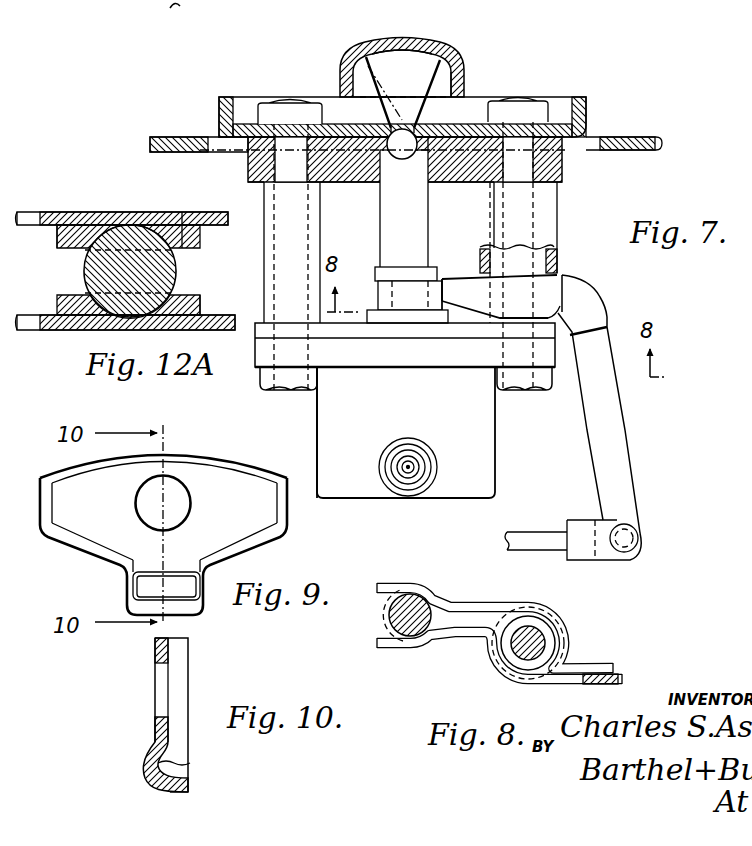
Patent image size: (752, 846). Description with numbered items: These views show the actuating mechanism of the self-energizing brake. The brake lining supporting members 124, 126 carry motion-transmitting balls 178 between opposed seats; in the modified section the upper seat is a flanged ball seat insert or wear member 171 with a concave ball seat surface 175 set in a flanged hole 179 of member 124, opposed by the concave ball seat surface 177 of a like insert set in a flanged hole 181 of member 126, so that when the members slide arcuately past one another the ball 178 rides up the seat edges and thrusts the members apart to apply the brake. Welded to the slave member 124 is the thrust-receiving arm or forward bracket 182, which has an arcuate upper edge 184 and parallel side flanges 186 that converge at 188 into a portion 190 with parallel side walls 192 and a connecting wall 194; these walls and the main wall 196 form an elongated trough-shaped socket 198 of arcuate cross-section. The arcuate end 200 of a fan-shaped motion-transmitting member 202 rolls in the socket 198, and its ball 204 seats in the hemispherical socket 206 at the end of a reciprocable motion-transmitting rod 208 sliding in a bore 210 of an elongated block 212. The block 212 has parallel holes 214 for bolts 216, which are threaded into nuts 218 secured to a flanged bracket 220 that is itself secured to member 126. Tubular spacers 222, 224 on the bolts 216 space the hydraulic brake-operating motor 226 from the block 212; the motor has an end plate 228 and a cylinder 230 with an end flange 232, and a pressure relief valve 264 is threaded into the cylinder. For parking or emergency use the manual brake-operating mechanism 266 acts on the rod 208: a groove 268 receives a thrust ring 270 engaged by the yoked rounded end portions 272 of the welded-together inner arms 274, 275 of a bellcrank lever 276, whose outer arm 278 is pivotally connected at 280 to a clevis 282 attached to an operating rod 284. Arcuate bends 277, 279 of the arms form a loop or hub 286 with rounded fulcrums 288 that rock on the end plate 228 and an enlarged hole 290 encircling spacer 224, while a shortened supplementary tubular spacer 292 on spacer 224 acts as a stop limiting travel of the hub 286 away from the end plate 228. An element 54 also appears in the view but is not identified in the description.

In FIG. 7, the mounting flange 54 is at (643, 133).
In FIG. 12A, the brake lining supporting member 124 is at (50, 209).
In FIG. 12A, the brake lining supporting member 126 is at (44, 334).
In FIG. 12A, the flanged ball seat insert 171 is at (110, 212).
In FIG. 12A, the concave ball seat surface 175 is at (82, 258).
In FIG. 12A, the concave ball seat surface 177 is at (88, 295).
In FIG. 12A, the motion-transmitting ball 178 is at (168, 266).
In FIG. 12A, the flanged hole 179 is at (172, 215).
In FIG. 12A, the flanged hole 181 is at (172, 325).
In FIG. 7, the forward bracket 182 is at (443, 42).
In FIG. 9, the forward bracket 182 is at (293, 528).
In FIG. 10, the forward bracket 182 is at (193, 677).
In FIG. 9, the arcuate upper edge 184 is at (245, 464).
In FIG. 9, the side flanges 186 is at (48, 492).
In FIG. 9, the converging portion 188 is at (105, 552).
In FIG. 9, the portion 190 is at (127, 604).
In FIG. 7, the side walls 192 is at (457, 80).
In FIG. 9, the side walls 192 is at (130, 578).
In FIG. 9, the connecting wall 194 is at (190, 610).
In FIG. 10, the connecting wall 194 is at (178, 792).
In FIG. 9, the main wall 196 is at (171, 513).
In FIG. 10, the main wall 196 is at (154, 745).
In FIG. 7, the trough-shaped socket 198 is at (373, 52).
In FIG. 9, the trough-shaped socket 198 is at (166, 586).
In FIG. 10, the trough-shaped socket 198 is at (190, 763).
In FIG. 7, the arcuate end 200 is at (402, 60).
In FIG. 7, the fan-shaped motion-transmitting member 202 is at (465, 86).
In FIG. 7, the ball 204 is at (428, 121).
In FIG. 7, the hemispherical socket 206 is at (402, 160).
In FIG. 7, the motion-transmitting rod 208 is at (410, 269).
In FIG. 8, the motion-transmitting rod 208 is at (395, 614).
In FIG. 7, the bore 210 is at (440, 170).
In FIG. 7, the elongated block 212 is at (333, 176).
In FIG. 7, the parallel holes 214 is at (277, 163).
In FIG. 7, the bolts 216 is at (297, 385).
In FIG. 8, the bolts 216 is at (537, 643).
In FIG. 7, the nuts 218 is at (267, 105).
In FIG. 7, the flanged bracket 220 is at (243, 123).
In FIG. 7, the tubular spacer 222 is at (284, 256).
In FIG. 7, the tubular spacer 224 is at (561, 254).
In FIG. 8, the tubular spacer 224 is at (508, 657).
In FIG. 7, the hydraulic brake-operating motor 226 is at (504, 452).
In FIG. 7, the end plate 228 is at (262, 334).
In FIG. 7, the cylinder 230 is at (320, 440).
In FIG. 7, the end flange 232 is at (262, 359).
In FIG. 7, the pressure relief valve 264 is at (436, 461).
In FIG. 7, the manual brake-operating mechanism 266 is at (567, 402).
In FIG. 8, the manual brake-operating mechanism 266 is at (506, 638).
In FIG. 7, the groove 268 is at (392, 266).
In FIG. 8, the groove 268 is at (377, 588).
In FIG. 7, the thrust ring 270 is at (408, 276).
In FIG. 8, the thrust ring 270 is at (373, 632).
In FIG. 7, the yoked rounded end portions 272 is at (380, 285).
In FIG. 7, the inner arm 274 is at (462, 285).
In FIG. 8, the inner arm 274 is at (462, 637).
In FIG. 8, the inner arm 275 is at (471, 605).
In FIG. 7, the bellcrank lever 276 is at (575, 295).
In FIG. 8, the bellcrank lever 276 is at (624, 669).
In FIG. 8, the arcuate bend 277 is at (499, 680).
In FIG. 7, the outer arm 278 is at (620, 470).
In FIG. 8, the outer arm 278 is at (613, 684).
In FIG. 8, the arcuate bend 279 is at (548, 633).
In FIG. 7, the pivotal connection 280 is at (642, 537).
In FIG. 7, the clevis 282 is at (606, 548).
In FIG. 7, the operating rod 284 is at (545, 530).
In FIG. 7, the loop 286 is at (560, 273).
In FIG. 8, the loop 286 is at (548, 606).
In FIG. 7, the rounded fulcrums 288 is at (520, 318).
In FIG. 8, the rounded fulcrums 288 is at (527, 608).
In FIG. 8, the enlarged hole 290 is at (562, 662).
In FIG. 7, the supplementary tubular spacer 292 is at (559, 206).
In FIG. 8, the supplementary tubular spacer 292 is at (498, 620).